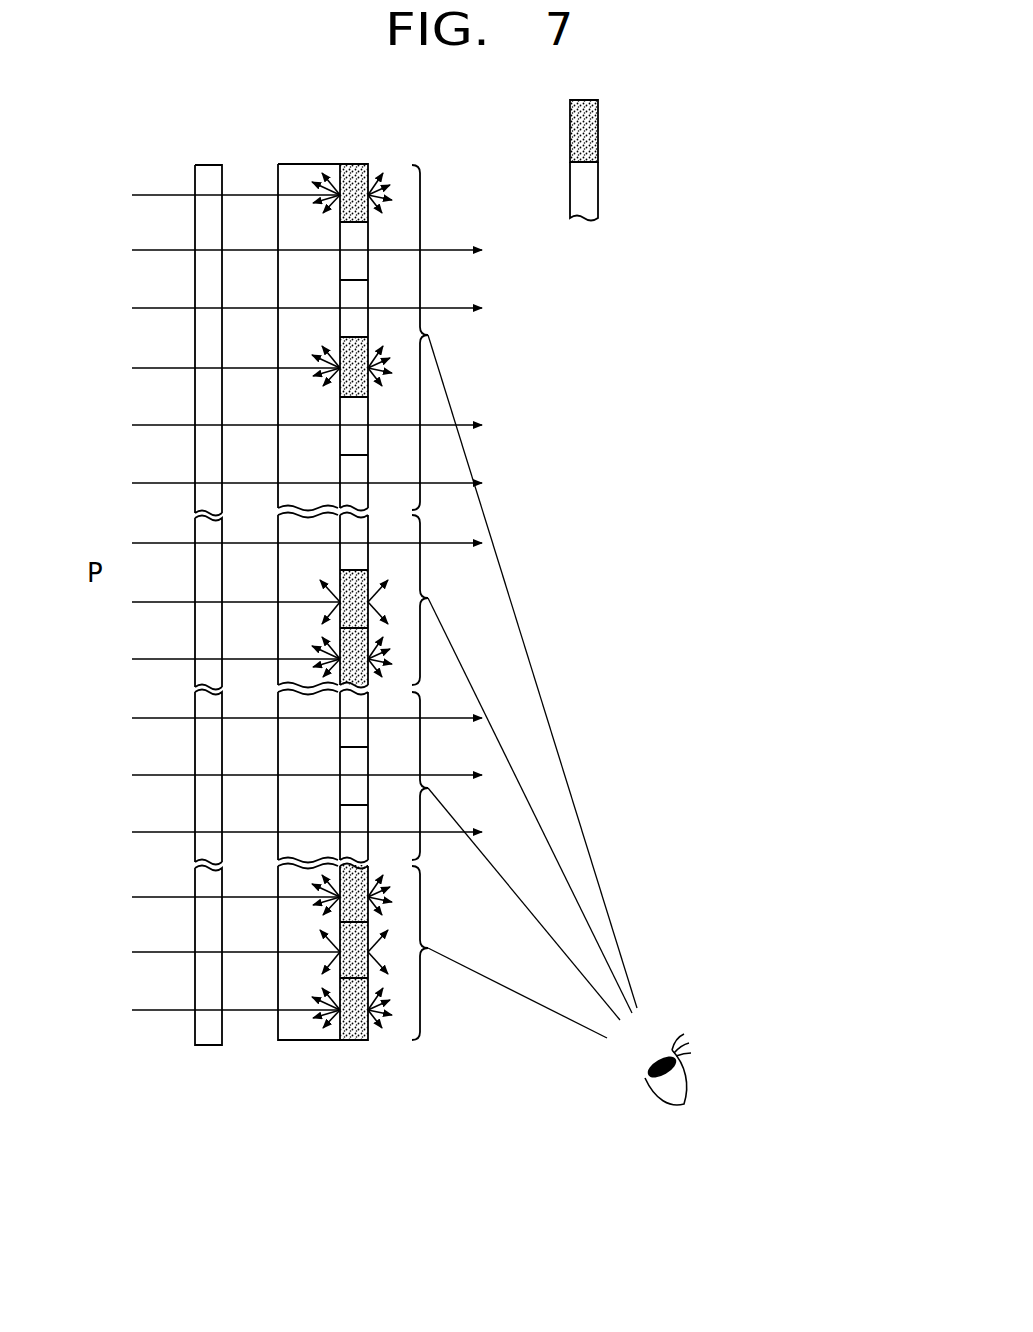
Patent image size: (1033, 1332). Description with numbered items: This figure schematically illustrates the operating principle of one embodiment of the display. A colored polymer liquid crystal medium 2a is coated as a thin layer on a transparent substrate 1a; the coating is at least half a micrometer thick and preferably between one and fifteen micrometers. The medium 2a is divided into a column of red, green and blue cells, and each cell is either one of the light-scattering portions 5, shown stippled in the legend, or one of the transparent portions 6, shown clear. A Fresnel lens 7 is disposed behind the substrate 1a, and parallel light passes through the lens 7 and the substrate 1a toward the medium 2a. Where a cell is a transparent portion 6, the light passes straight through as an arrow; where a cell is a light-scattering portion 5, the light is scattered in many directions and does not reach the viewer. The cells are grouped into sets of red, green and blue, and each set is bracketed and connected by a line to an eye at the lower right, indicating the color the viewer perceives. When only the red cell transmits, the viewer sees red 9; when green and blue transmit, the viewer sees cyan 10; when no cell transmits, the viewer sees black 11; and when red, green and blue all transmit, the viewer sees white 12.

The light-scattering portions 5 is at (590, 128).
The transparent portions 6 is at (590, 190).
The Fresnel lens 7 is at (210, 1035).
The transparent substrate 1a is at (298, 1030).
The colored polymer liquid crystal medium 2a is at (353, 1037).
The red (R) 9 is at (522, 637).
The cyan (C) 10 is at (516, 777).
The black (BK) 11 is at (515, 893).
The white (W) 12 is at (525, 997).